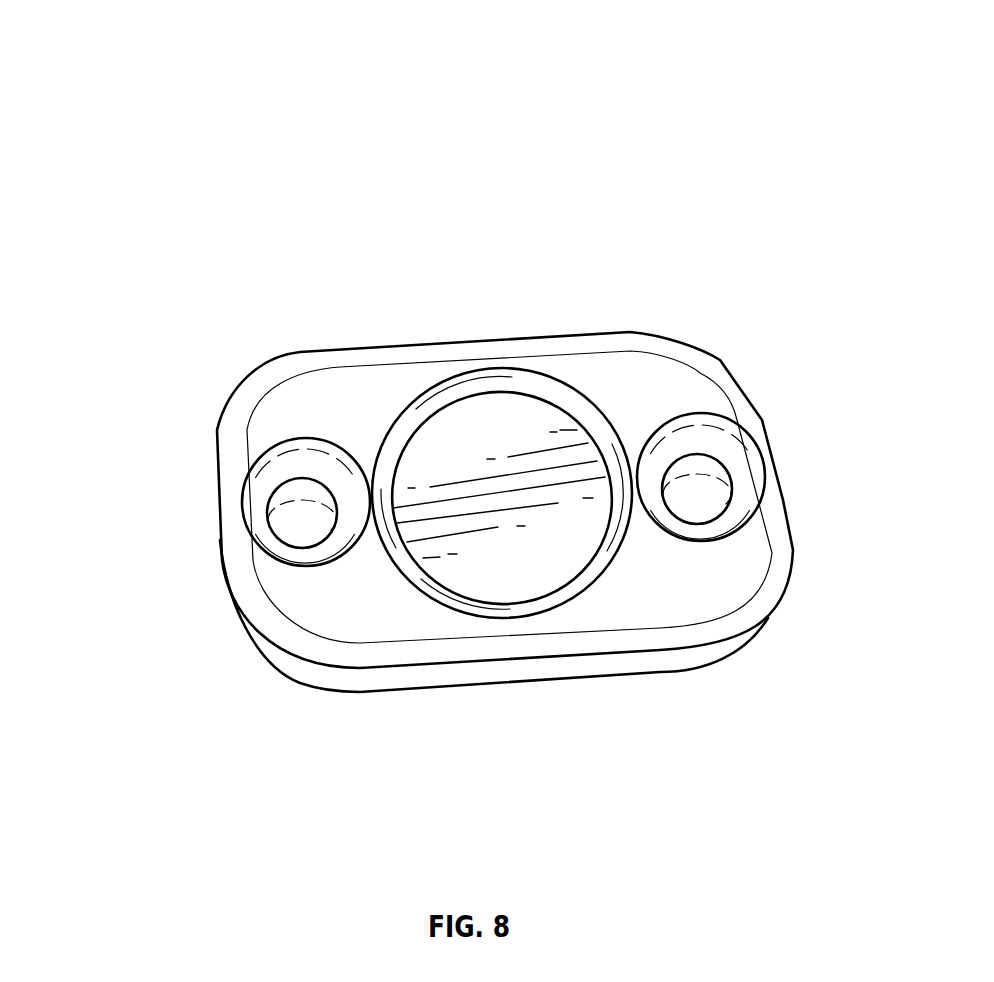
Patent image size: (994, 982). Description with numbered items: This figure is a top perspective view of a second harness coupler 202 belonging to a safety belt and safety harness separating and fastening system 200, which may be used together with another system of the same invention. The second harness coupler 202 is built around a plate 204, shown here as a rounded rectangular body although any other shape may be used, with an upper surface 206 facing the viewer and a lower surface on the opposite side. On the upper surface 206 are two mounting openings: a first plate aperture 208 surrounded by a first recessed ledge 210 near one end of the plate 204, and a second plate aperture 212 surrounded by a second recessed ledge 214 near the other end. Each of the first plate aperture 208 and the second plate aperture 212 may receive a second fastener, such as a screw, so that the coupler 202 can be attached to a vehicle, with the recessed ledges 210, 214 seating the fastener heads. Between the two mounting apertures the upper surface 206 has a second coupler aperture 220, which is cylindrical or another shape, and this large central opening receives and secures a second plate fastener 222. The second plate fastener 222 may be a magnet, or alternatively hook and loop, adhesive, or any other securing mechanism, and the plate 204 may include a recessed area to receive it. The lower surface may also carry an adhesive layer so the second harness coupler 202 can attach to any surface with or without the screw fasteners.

The system 200 is at (146, 52).
The second harness coupler 202 is at (242, 407).
The plate 204 is at (623, 372).
The upper surface 206 is at (678, 595).
The first plate aperture 208 is at (303, 513).
The first recessed ledge 210 is at (272, 540).
The second plate aperture 212 is at (705, 478).
The second recessed ledge 214 is at (723, 518).
The second coupler aperture 220 is at (472, 438).
The second plate fastener 222 is at (507, 592).